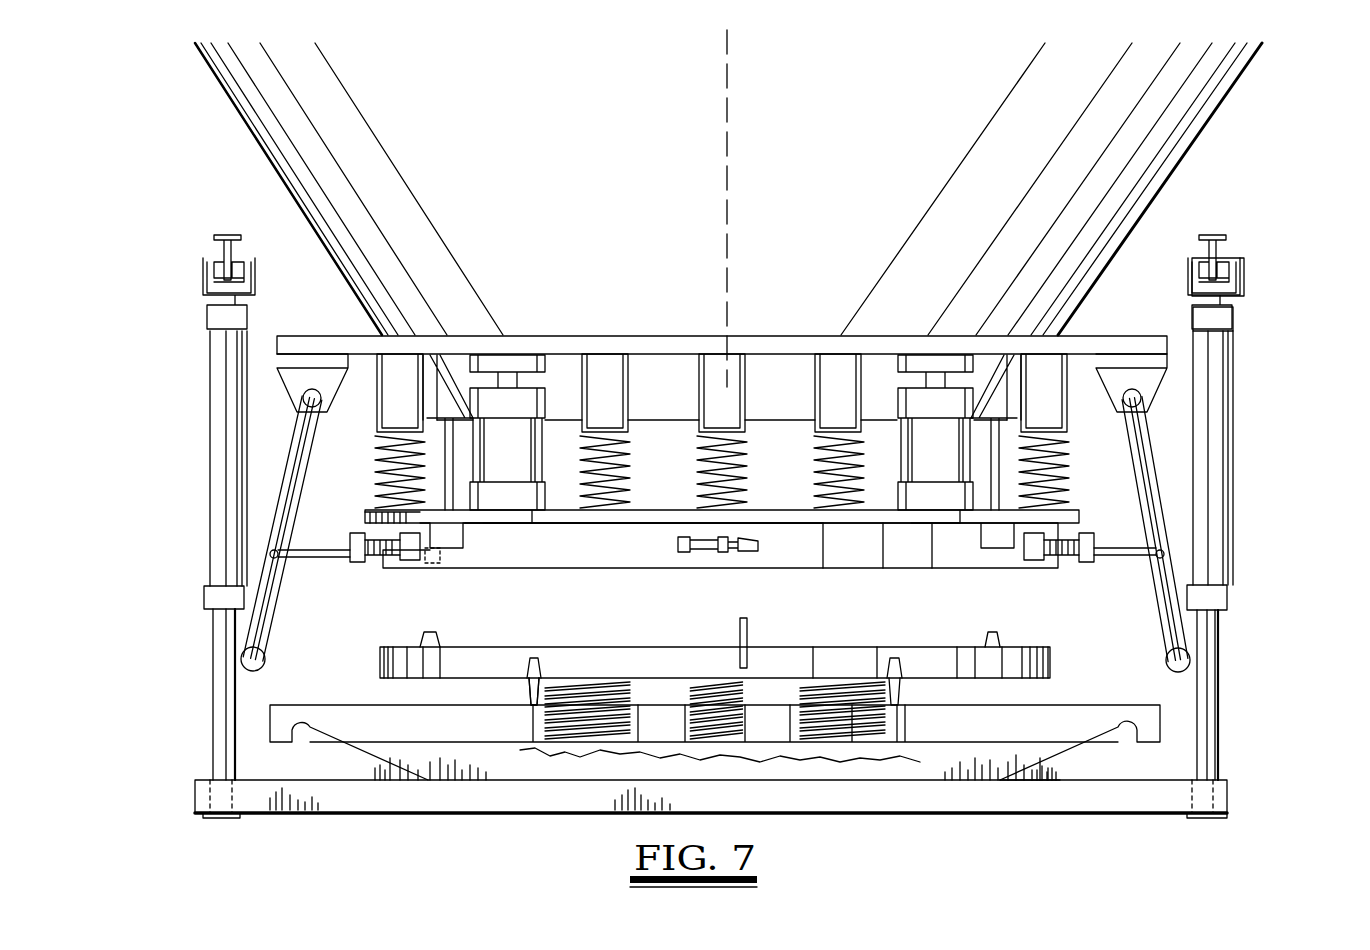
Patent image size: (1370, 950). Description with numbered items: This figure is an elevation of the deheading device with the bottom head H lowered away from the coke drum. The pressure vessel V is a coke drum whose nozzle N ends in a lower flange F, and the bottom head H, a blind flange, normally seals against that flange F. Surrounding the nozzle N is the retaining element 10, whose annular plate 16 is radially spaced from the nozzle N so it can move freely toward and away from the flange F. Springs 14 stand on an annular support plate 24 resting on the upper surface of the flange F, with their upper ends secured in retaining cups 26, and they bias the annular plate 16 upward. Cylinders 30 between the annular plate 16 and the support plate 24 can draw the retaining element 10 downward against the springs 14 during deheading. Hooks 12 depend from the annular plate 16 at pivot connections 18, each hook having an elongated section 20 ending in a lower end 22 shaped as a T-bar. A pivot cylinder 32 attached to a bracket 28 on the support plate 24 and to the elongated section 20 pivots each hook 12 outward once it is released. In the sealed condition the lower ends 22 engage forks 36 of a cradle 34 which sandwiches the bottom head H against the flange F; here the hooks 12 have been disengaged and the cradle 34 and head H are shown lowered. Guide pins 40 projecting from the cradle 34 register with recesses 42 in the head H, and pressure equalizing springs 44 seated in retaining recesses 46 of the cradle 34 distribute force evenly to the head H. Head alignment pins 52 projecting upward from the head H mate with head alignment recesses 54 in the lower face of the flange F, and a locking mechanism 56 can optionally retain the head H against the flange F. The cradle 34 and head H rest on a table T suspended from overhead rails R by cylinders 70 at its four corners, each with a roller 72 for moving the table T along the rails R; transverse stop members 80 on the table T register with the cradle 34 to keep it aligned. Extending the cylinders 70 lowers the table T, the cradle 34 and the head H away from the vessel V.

The retaining element 10 is at (647, 318).
The hooks 12 is at (293, 490).
The springs 14 is at (742, 455).
The annular plate 16 is at (515, 345).
The pivot connection 18 is at (312, 378).
The elongated section 20 is at (285, 580).
The lower end 22 is at (245, 662).
The support plate 24 is at (546, 515).
The retaining cups 26 is at (405, 355).
The bracket 28 is at (445, 538).
The cylinders 30 is at (512, 395).
The pivot cylinder 32 is at (364, 566).
The cradle 34 is at (815, 772).
The fork 36 is at (1145, 722).
The guide pins 40 is at (533, 702).
The recesses 42 is at (542, 668).
The pressure equalizing springs 44 is at (605, 722).
The retaining recesses 46 is at (705, 733).
The head alignment pins 52 is at (435, 635).
The head alignment recesses 54 is at (430, 565).
The locking mechanism 56 is at (764, 545).
The cylinders 70 is at (1235, 360).
The roller 72 is at (1238, 265).
The transverse stop members 80 is at (1058, 772).
The table T is at (362, 795).
The pressure vessel V is at (1180, 97).
The overhead rails R is at (1217, 232).
The nozzle N is at (392, 447).
The flange F is at (657, 538).
The bottom head H is at (947, 662).